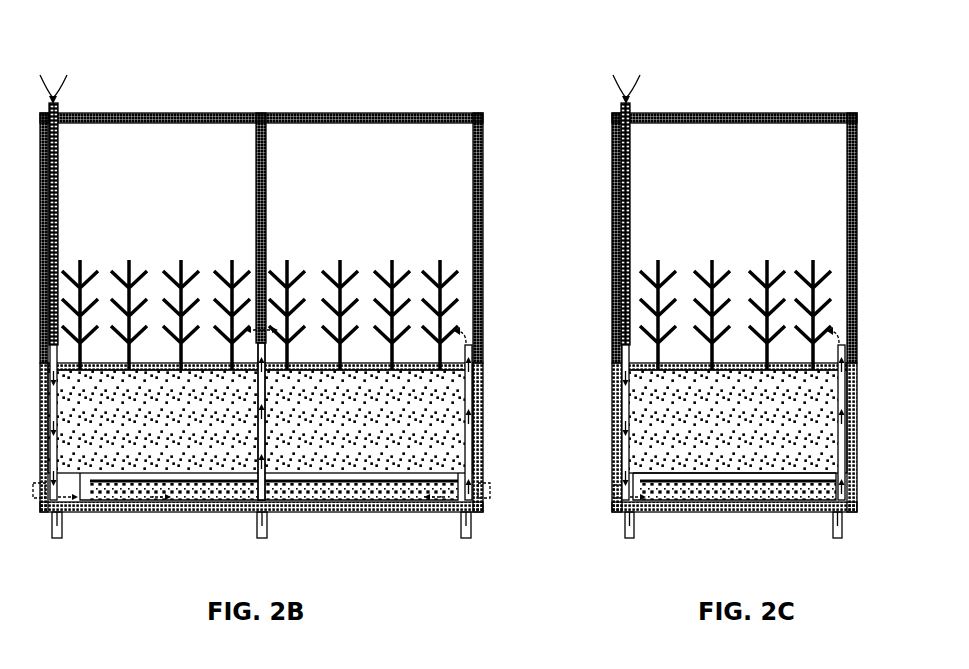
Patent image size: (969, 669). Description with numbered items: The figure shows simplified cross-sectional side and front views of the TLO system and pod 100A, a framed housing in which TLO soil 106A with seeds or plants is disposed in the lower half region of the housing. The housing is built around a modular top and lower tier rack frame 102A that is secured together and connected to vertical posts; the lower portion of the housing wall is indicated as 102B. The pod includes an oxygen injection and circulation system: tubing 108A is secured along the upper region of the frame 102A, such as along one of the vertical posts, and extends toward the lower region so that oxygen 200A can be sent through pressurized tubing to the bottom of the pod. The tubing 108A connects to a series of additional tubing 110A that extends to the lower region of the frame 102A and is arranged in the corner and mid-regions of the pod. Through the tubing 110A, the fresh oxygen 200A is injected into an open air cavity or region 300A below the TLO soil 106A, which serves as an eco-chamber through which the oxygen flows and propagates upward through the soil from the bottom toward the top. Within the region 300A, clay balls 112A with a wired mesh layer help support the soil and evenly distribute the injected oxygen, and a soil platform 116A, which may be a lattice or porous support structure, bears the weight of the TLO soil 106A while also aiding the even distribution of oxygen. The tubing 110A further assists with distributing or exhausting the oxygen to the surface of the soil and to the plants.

In FIG. 2B, the TLO system and pod 100A is at (296, 62).
In FIG. 2B, the frame 102A is at (372, 112).
In FIG. 2C, the frame 102A is at (773, 112).
In FIG. 2B, the lower housing wall 102B is at (483, 417).
In FIG. 2B, the TLO soil 106A is at (437, 384).
In FIG. 2B, the tubing 108A is at (58, 170).
In FIG. 2B, the tubing 110A is at (473, 462).
In FIG. 2C, the tubing 110A is at (624, 395).
In FIG. 2B, the clay balls 112A is at (93, 490).
In FIG. 2C, the clay balls 112A is at (703, 493).
In FIG. 2B, the soil platform 116A is at (280, 475).
In FIG. 2C, the soil platform 116A is at (652, 478).
In FIG. 2B, the oxygen 200A is at (51, 60).
In FIG. 2C, the oxygen 200A is at (626, 60).
In FIG. 2B, the region 300A is at (420, 494).